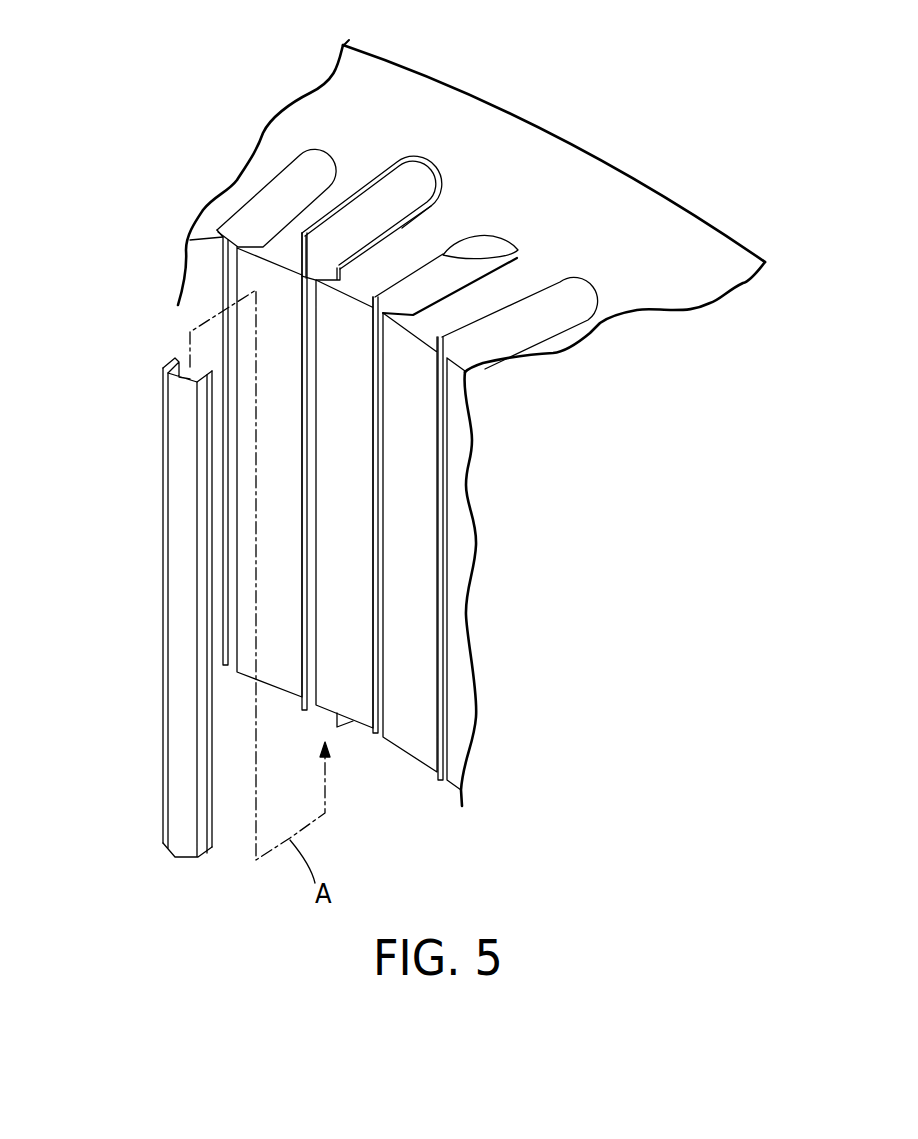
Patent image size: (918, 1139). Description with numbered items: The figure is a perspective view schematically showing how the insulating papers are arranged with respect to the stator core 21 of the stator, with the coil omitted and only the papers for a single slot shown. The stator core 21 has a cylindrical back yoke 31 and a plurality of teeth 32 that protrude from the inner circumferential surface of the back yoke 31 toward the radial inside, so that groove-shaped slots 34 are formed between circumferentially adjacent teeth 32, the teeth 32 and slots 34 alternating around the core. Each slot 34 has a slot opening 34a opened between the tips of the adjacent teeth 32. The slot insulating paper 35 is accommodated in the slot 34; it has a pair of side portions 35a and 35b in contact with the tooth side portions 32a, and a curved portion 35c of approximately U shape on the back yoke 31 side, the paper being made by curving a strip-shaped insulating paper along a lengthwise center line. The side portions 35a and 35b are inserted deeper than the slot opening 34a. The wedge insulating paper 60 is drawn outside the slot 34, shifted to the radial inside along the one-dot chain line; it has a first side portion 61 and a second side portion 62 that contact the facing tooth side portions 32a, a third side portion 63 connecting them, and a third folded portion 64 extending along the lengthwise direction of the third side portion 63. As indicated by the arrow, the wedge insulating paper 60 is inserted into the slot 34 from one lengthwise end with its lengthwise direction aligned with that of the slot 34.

The stator core 21 is at (521, 113).
The back yoke 31 is at (732, 258).
The teeth 32 is at (293, 227).
The tooth side portions 32a is at (495, 260).
The slots 34 is at (302, 173).
The slot openings 34a is at (190, 262).
The slot insulating paper 35 is at (379, 140).
The side portion 35a is at (371, 195).
The side portion 35b is at (418, 245).
The curved portion 35c is at (412, 225).
The wedge insulating paper 60 is at (141, 579).
The first side portion 61 is at (173, 362).
The second side portion 62 is at (200, 410).
The third side portion 63 is at (183, 567).
The third folded portion 64 is at (173, 698).